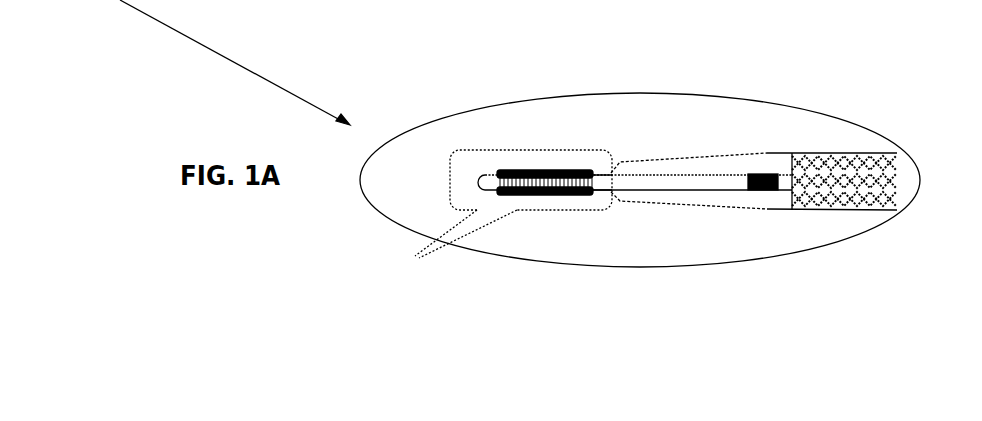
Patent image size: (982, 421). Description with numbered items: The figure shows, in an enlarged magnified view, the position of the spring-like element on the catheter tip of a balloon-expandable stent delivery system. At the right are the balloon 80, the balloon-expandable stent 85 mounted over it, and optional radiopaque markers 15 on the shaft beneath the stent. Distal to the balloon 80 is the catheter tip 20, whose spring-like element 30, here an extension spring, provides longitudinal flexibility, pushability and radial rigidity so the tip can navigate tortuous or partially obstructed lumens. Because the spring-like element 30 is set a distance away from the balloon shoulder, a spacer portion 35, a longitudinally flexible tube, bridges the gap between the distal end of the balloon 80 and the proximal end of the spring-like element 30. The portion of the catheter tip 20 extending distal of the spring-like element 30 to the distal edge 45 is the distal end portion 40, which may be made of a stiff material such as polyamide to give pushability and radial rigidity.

The radiopaque markers 15 is at (760, 192).
The catheter tip 20 is at (422, 257).
The spring-like element 30 is at (558, 192).
The spacer portion 35 is at (601, 180).
The distal end portion 40 is at (487, 181).
The distal edge 45 is at (473, 177).
The balloon 80 is at (743, 157).
The balloon-expandable stent 85 is at (857, 192).